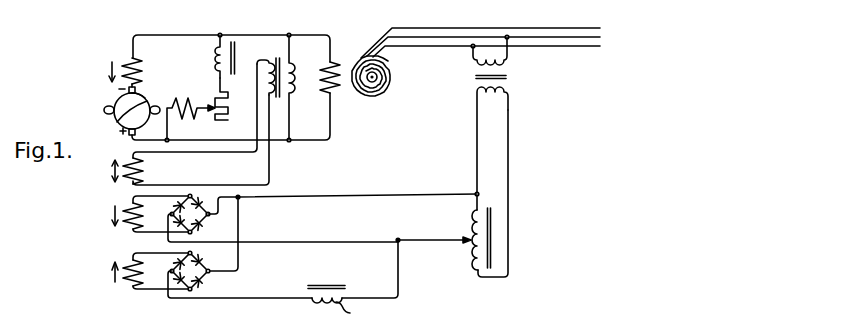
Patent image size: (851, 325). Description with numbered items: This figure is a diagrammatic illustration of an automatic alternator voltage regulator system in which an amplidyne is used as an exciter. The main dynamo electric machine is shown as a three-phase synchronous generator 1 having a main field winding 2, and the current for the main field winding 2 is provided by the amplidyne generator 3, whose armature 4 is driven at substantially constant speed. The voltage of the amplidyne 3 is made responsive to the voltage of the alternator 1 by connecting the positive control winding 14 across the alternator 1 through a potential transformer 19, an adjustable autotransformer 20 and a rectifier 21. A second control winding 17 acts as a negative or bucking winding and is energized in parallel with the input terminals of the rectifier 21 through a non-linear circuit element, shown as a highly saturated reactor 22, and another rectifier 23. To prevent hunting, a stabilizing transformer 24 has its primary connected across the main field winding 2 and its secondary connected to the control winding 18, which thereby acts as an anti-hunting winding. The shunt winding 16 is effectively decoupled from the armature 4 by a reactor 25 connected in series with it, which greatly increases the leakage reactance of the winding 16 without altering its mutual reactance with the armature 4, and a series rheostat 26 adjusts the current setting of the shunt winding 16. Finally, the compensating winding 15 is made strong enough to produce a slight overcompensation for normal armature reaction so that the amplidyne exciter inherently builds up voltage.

The three-phase synchronous generator 1 is at (380, 95).
The main field winding 2 is at (324, 67).
The amplidyne generator 3 is at (92, 116).
The armature 4 is at (147, 98).
The positive control winding 14 is at (145, 220).
The compensating winding 15 is at (130, 64).
The shunt winding 16 is at (183, 118).
The control winding 17 is at (144, 277).
The control winding 18 is at (147, 171).
The potential transformer 19 is at (510, 74).
The adjustable autotransformer 20 is at (468, 246).
The rectifier 21 is at (207, 221).
The highly saturated reactor 22 is at (347, 297).
The rectifier 23 is at (208, 277).
The stabilizing transformer 24 is at (274, 61).
The reactor 25 is at (216, 52).
The series rheostat 26 is at (227, 102).